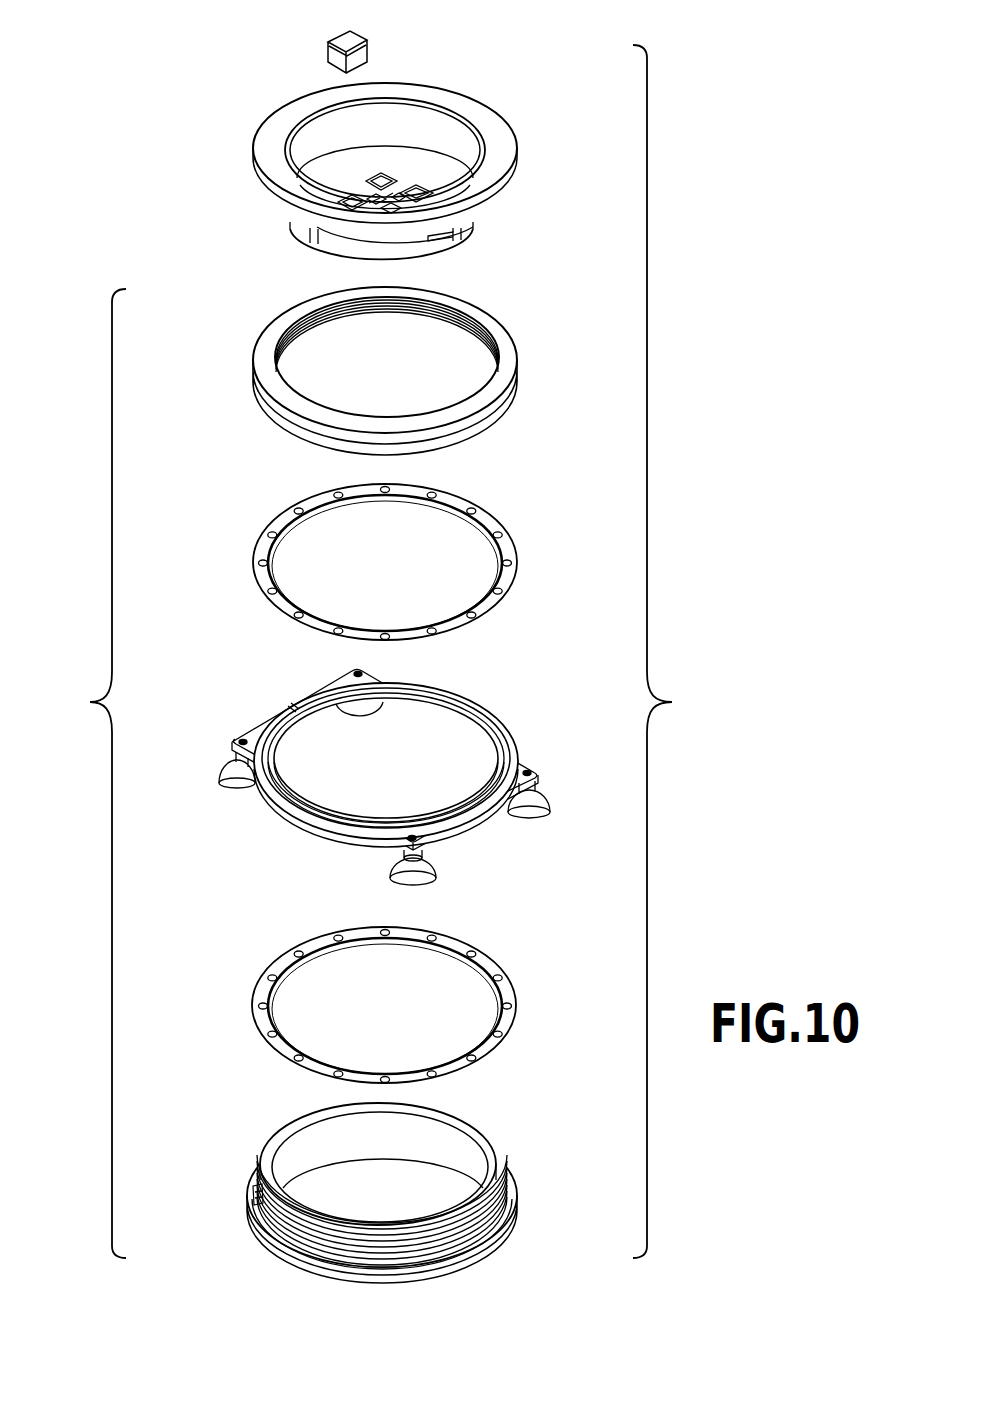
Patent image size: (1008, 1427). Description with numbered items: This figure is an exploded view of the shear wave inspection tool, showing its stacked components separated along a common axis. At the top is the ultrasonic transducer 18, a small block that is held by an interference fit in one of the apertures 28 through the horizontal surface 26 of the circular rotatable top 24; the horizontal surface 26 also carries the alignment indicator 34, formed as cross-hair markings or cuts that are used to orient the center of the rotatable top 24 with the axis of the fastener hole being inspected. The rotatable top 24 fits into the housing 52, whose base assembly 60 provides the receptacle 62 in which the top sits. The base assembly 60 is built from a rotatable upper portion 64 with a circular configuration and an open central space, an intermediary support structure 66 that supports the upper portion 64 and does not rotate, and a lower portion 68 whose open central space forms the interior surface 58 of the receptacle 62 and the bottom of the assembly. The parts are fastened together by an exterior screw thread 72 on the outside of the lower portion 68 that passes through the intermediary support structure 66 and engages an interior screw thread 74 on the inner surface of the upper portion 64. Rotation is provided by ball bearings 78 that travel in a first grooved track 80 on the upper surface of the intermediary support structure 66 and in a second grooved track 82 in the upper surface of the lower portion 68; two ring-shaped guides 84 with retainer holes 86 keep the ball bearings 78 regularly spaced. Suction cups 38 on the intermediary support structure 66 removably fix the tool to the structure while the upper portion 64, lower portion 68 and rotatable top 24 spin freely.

The ultrasonic transducer 18 is at (340, 40).
The rotatable top 24 is at (255, 175).
The horizontal surface 26 is at (320, 178).
The apertures 28 is at (421, 193).
The alignment indicator 34 is at (436, 199).
The suction cups 38 is at (366, 709).
The housing 52 is at (671, 651).
The interior surface 58 is at (383, 1197).
The base assembly 60 is at (93, 773).
The receptacle 62 is at (424, 1200).
The upper portion 64 is at (379, 363).
The intermediary support structure 66 is at (391, 784).
The lower portion 68 is at (492, 1183).
The exterior screw thread 72 is at (313, 1233).
The interior screw thread 74 is at (391, 312).
The ball bearings 78 is at (296, 706).
The first grooved track 80 is at (284, 728).
The second grooved track 82 is at (254, 1203).
The guides 84 is at (414, 770).
The retainer holes 86 is at (430, 627).